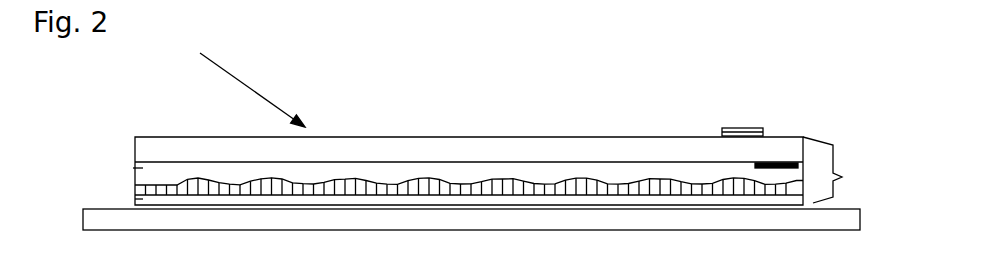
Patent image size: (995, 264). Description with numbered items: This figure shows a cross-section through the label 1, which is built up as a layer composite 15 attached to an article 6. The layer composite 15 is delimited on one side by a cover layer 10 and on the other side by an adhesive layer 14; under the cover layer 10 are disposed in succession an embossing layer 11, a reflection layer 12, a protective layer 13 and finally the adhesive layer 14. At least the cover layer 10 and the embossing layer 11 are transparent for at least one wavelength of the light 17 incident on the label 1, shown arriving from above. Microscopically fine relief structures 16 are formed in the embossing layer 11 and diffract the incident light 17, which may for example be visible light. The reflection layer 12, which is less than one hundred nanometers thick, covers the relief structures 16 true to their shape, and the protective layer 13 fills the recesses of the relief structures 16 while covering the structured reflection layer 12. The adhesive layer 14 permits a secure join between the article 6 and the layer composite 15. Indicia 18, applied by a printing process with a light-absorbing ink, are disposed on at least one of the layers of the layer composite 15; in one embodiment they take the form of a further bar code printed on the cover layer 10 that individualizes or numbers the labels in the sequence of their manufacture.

The label 1 is at (643, 104).
The article 6 is at (748, 230).
The cover layer 10 is at (168, 145).
The embossing layer 11 is at (135, 168).
The reflection layer 12 is at (135, 184).
The protective layer 13 is at (135, 191).
The adhesive layer 14 is at (135, 198).
The layer composite 15 is at (845, 177).
The microscopically fine relief structures 16 is at (454, 177).
The incident light 17 is at (248, 87).
The indicia 18 is at (784, 160).